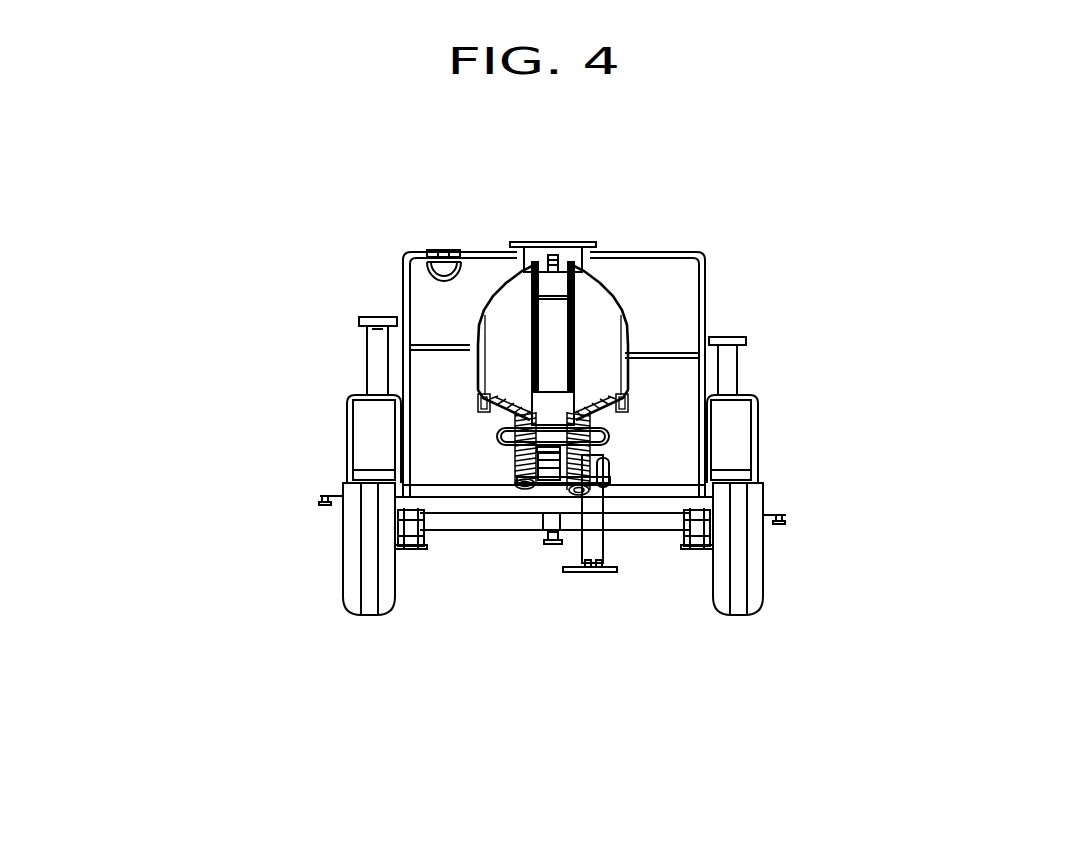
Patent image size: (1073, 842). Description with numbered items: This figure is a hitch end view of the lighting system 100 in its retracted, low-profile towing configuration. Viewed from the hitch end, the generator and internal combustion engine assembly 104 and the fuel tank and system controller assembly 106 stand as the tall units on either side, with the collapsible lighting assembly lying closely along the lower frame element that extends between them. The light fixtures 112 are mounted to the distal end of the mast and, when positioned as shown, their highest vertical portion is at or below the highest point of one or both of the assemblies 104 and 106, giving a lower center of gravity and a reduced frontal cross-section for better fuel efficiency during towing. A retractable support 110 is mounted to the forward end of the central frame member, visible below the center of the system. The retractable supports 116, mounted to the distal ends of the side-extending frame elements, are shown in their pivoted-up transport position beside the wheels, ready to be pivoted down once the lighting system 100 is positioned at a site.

The lighting system 100 is at (378, 239).
The generator and internal combustion engine assembly 104 is at (667, 291).
The fuel tank and system controller assembly 106 is at (477, 281).
The retractable support 110 is at (594, 540).
The light fixtures 112 is at (597, 323).
The retractable support 116 is at (375, 376).